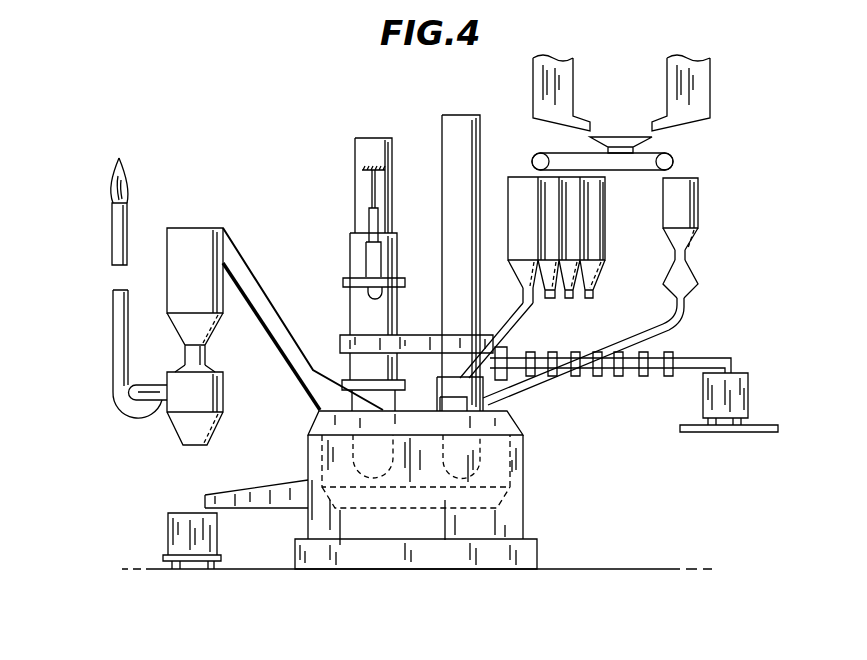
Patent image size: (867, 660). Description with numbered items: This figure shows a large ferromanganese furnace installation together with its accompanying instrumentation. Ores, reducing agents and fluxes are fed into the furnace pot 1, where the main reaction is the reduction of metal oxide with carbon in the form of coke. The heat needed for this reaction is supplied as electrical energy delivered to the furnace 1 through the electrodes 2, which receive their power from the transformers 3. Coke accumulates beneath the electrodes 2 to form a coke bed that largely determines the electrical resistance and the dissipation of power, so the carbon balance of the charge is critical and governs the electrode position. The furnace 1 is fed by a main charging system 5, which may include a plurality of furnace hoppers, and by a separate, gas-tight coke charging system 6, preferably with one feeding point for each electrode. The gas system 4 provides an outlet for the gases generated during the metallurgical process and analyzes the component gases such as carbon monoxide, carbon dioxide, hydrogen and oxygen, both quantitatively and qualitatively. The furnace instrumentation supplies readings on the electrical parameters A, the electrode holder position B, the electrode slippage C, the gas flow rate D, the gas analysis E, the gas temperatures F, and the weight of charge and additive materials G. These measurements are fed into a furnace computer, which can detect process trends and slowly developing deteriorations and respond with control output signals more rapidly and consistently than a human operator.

The furnace pot 1 is at (513, 474).
The electrodes 2 is at (449, 128).
The transformers 3 is at (737, 400).
The gas system 4 is at (188, 240).
The main charging system 5 is at (523, 117).
The coke charging system 6 is at (690, 206).
The electrical parameters A is at (748, 380).
The electrode holder position B is at (340, 236).
The electrode slippage C is at (342, 140).
The gas flow rate D is at (123, 362).
The gas analysis E is at (117, 312).
The gas temperatures F is at (321, 383).
The weight of charge and additive materials G is at (620, 137).